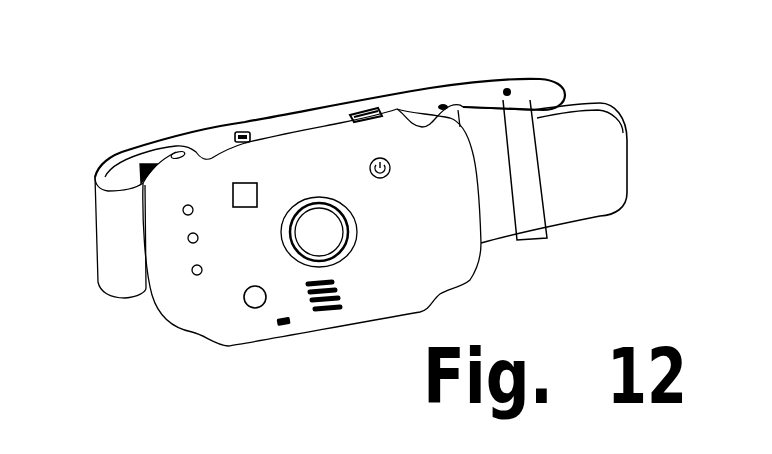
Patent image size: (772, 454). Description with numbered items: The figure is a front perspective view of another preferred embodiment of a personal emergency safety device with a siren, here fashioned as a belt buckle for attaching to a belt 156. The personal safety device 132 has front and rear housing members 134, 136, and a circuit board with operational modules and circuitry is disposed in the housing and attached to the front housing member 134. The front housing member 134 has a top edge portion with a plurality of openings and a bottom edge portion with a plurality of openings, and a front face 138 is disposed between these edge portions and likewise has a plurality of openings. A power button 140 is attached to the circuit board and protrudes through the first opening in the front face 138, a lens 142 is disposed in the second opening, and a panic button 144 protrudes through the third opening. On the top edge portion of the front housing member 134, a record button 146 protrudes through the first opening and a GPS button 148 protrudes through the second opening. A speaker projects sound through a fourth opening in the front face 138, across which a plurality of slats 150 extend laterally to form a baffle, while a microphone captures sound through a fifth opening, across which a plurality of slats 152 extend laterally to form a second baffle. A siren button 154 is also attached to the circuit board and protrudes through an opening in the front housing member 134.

The personal safety device 132 is at (242, 108).
The front housing member 134 is at (420, 123).
The rear housing member 136 is at (298, 118).
The front face 138 is at (312, 227).
The power button 140 is at (393, 172).
The lens 142 is at (333, 243).
The panic button 144 is at (230, 193).
The record button 146 is at (227, 128).
The GPS button 148 is at (372, 107).
The slats 150 is at (332, 315).
The slats 152 is at (277, 328).
The siren button 154 is at (246, 303).
The belt 156 is at (623, 140).